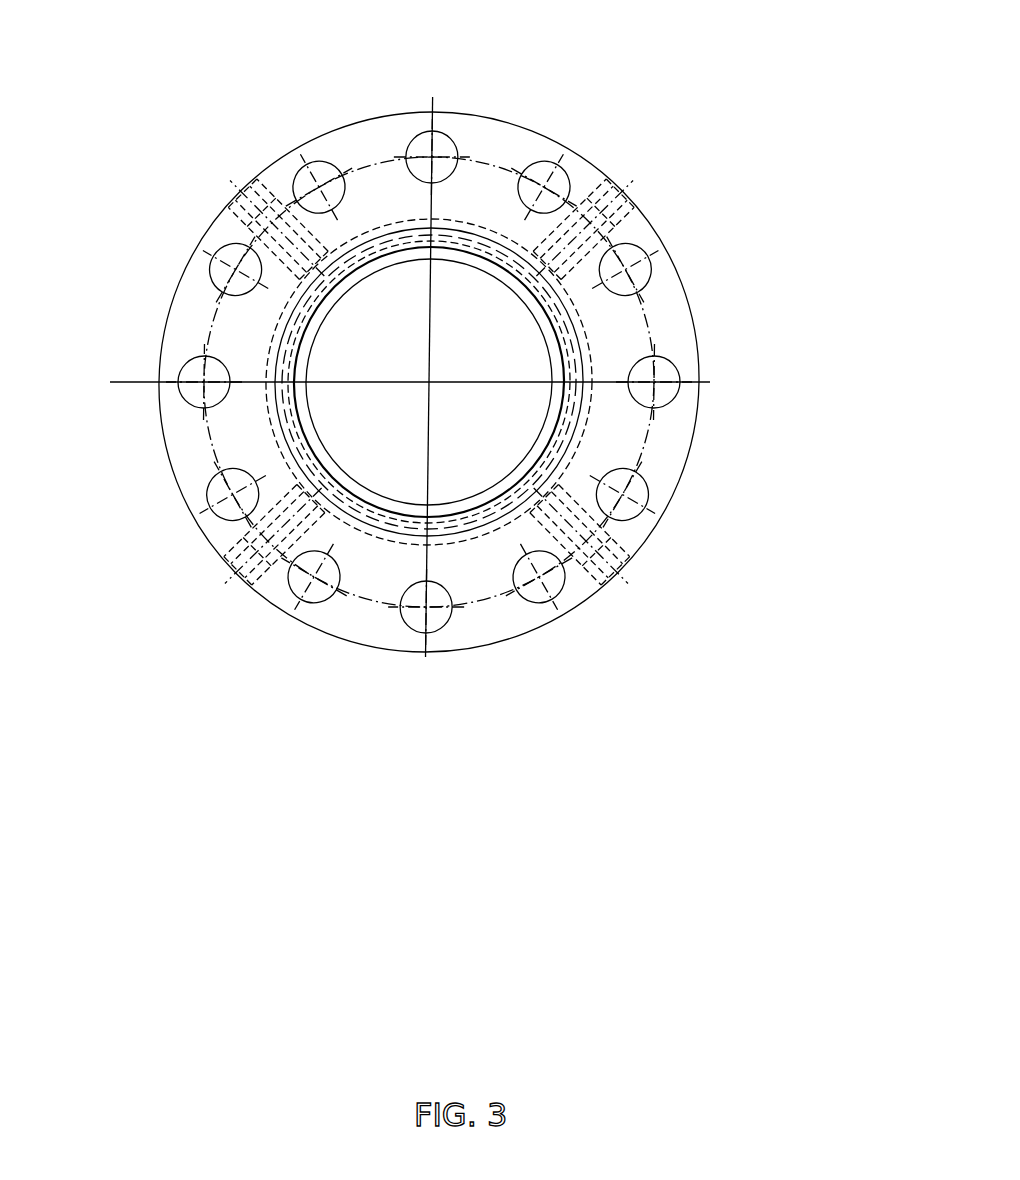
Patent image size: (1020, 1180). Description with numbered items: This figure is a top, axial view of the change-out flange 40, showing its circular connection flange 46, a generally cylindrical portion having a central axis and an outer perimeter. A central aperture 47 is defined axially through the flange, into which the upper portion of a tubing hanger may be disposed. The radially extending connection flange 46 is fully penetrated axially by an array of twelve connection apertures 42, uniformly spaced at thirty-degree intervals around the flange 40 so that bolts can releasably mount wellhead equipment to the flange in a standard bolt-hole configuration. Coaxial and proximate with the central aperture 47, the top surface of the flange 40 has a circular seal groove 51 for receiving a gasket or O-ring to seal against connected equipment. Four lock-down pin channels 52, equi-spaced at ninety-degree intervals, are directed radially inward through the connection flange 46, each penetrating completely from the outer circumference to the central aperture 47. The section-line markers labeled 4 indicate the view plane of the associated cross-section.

The change-out flange 40 is at (612, 80).
The connection apertures 42 is at (295, 183).
The connection flange 46 is at (660, 440).
The central aperture 47 is at (410, 377).
The seal groove 51 is at (580, 347).
The lock-down pin channels 52 is at (247, 212).
The section line 4- 4 is at (632, 183).